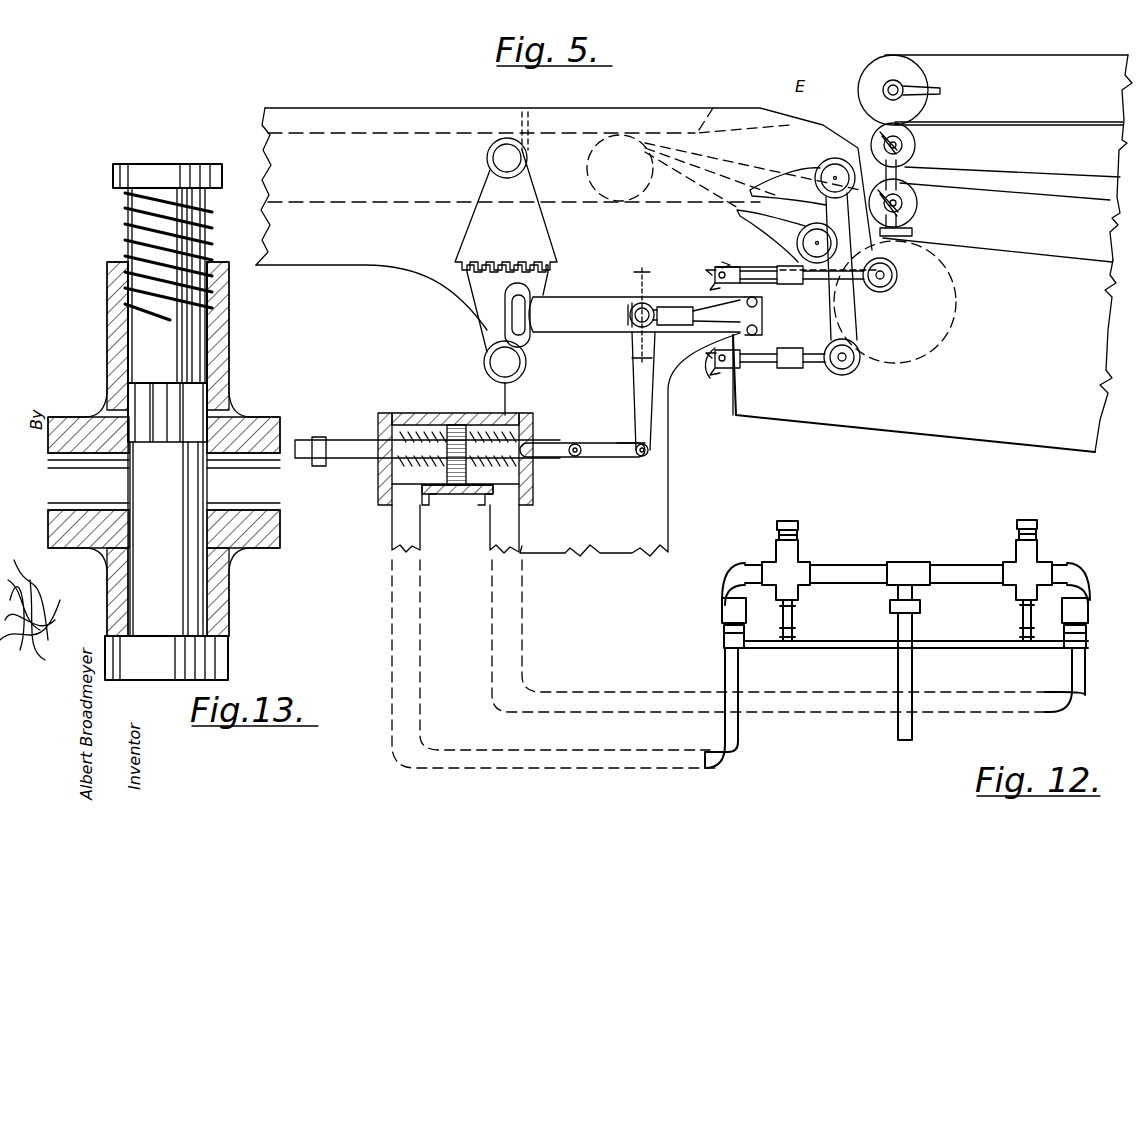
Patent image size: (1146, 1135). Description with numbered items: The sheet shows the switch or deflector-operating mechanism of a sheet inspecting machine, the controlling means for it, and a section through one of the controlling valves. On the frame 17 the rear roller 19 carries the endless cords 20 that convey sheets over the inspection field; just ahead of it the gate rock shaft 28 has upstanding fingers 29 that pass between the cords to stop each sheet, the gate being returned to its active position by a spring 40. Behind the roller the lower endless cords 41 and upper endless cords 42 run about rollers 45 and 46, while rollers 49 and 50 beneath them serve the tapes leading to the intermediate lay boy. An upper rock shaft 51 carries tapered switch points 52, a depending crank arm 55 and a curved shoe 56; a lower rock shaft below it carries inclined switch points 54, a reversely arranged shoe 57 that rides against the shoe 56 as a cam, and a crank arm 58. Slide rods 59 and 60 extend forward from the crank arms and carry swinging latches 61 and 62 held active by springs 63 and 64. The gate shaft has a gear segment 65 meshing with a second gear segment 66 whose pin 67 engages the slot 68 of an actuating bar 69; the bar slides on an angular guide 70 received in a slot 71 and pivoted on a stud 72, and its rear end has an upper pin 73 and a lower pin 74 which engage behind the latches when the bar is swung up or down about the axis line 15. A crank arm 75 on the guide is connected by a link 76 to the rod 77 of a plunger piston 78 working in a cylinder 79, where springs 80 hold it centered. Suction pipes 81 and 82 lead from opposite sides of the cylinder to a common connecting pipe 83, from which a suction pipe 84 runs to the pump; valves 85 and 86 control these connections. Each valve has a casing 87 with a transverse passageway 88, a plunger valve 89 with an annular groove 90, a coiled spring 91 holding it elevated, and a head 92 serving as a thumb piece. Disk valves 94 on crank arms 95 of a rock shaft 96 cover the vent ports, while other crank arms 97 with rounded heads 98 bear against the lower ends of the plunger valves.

In FIG. 5, the pivot axis line 15 is at (633, 312).
In FIG. 5, the frame 17 is at (322, 238).
In FIG. 5, the roller 19 is at (648, 170).
In FIG. 5, the cords 20 is at (357, 140).
In FIG. 5, the rock shaft 28 is at (495, 160).
In FIG. 5, the upstanding fingers 29 is at (530, 112).
In FIG. 5, the spring 40 is at (1070, 200).
In FIG. 5, the lower endless cords 41 is at (1047, 158).
In FIG. 5, the upper endless cords 42 is at (1028, 48).
In FIG. 5, the roller 45 is at (915, 145).
In FIG. 5, the roller 46 is at (886, 56).
In FIG. 5, the roller 49 is at (947, 308).
In FIG. 5, the roller 50 is at (917, 203).
In FIG. 5, the upper rock shaft 51 is at (822, 152).
In FIG. 5, the switch points 52 is at (722, 100).
In FIG. 5, the switch points 54 is at (700, 182).
In FIG. 5, the crank arm 55 is at (912, 232).
In FIG. 5, the curved shoe 56 is at (775, 176).
In FIG. 5, the shoe 57 is at (737, 225).
In FIG. 5, the crank arm 58 is at (797, 245).
In FIG. 5, the slide rod 59 is at (756, 273).
In FIG. 5, the slide rod 60 is at (768, 365).
In FIG. 5, the latch 61 is at (705, 290).
In FIG. 12, the latch 61 is at (738, 672).
In FIG. 5, the latch 62 is at (703, 376).
In FIG. 5, the spring 63 is at (718, 255).
In FIG. 5, the spring 64 is at (745, 377).
In FIG. 5, the gear segment 65 is at (472, 215).
In FIG. 5, the gear segment 66 is at (478, 318).
In FIG. 5, the pin 67 is at (528, 310).
In FIG. 5, the slot 68 is at (525, 340).
In FIG. 5, the actuating bar 69 is at (637, 314).
In FIG. 5, the angular guide 70 is at (630, 317).
In FIG. 5, the slot 71 is at (722, 318).
In FIG. 5, the stud 72 is at (655, 300).
In FIG. 5, the upper pin 73 is at (758, 302).
In FIG. 5, the lower pin 74 is at (758, 330).
In FIG. 5, the crank arm 75 is at (634, 402).
In FIG. 5, the link 76 is at (618, 452).
In FIG. 5, the rod 77 is at (562, 452).
In FIG. 5, the plunger piston 78 is at (456, 425).
In FIG. 5, the cylinder 79 is at (406, 400).
In FIG. 5, the springs 80 is at (398, 440).
In FIG. 5, the suction pipe 81 is at (392, 521).
In FIG. 5, the suction pipe 82 is at (520, 528).
In FIG. 12, the suction pipe 82 is at (1085, 668).
In FIG. 12, the connecting pipe 83 is at (858, 565).
In FIG. 12, the suction pipe 84 is at (912, 672).
In FIG. 12, the valve 85 is at (798, 545).
In FIG. 12, the valve 86 is at (1037, 546).
In FIG. 13, the casing 87 is at (235, 575).
In FIG. 13, the passageway 88 is at (164, 481).
In FIG. 13, the plunger valve 89 is at (167, 539).
In FIG. 13, the annular groove 90 is at (190, 400).
In FIG. 12, the coiled spring 91 is at (797, 535).
In FIG. 13, the coiled spring 91 is at (123, 230).
In FIG. 12, the head 92 is at (786, 521).
In FIG. 13, the head 92 is at (170, 164).
In FIG. 12, the disk valves 94 is at (716, 608).
In FIG. 12, the crank arms 95 is at (718, 630).
In FIG. 12, the rock shaft 96 is at (982, 650).
In FIG. 12, the crank arms 97 is at (795, 628).
In FIG. 12, the rounded heads 98 is at (795, 610).